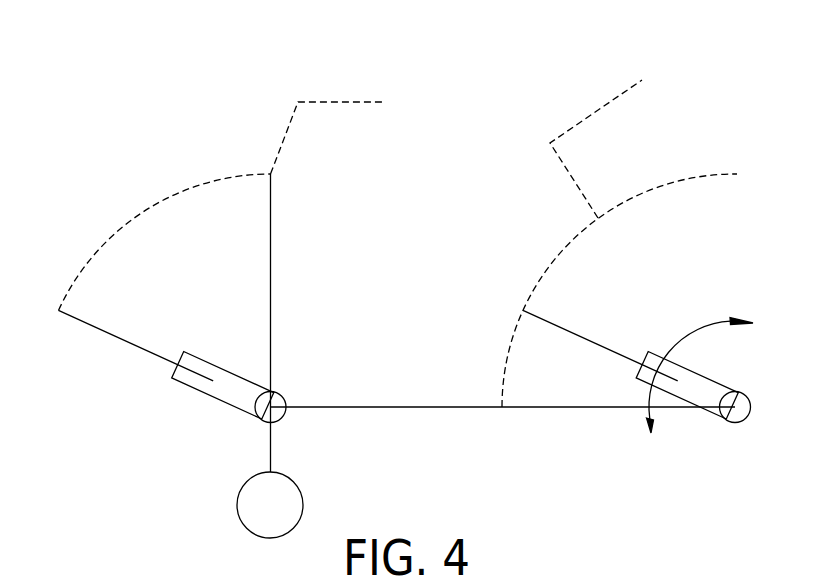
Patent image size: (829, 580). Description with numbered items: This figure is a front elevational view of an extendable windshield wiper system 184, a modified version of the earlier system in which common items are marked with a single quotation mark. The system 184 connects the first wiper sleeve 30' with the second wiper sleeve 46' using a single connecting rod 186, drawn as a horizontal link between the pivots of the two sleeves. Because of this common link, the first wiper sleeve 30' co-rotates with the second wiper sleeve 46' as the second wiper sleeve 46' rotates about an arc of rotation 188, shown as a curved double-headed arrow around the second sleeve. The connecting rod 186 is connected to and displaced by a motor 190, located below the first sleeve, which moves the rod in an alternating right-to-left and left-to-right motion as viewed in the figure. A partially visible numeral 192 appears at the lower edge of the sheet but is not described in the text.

The first wiper sleeve 30' is at (173, 376).
The second wiper sleeve 46' is at (644, 366).
The extendable windshield wiper system 184 is at (502, 61).
The connecting rod 186 is at (525, 408).
The arc of rotation 188 is at (692, 332).
The motor 190 is at (303, 505).
The partially visible numeral 192 is at (784, 576).